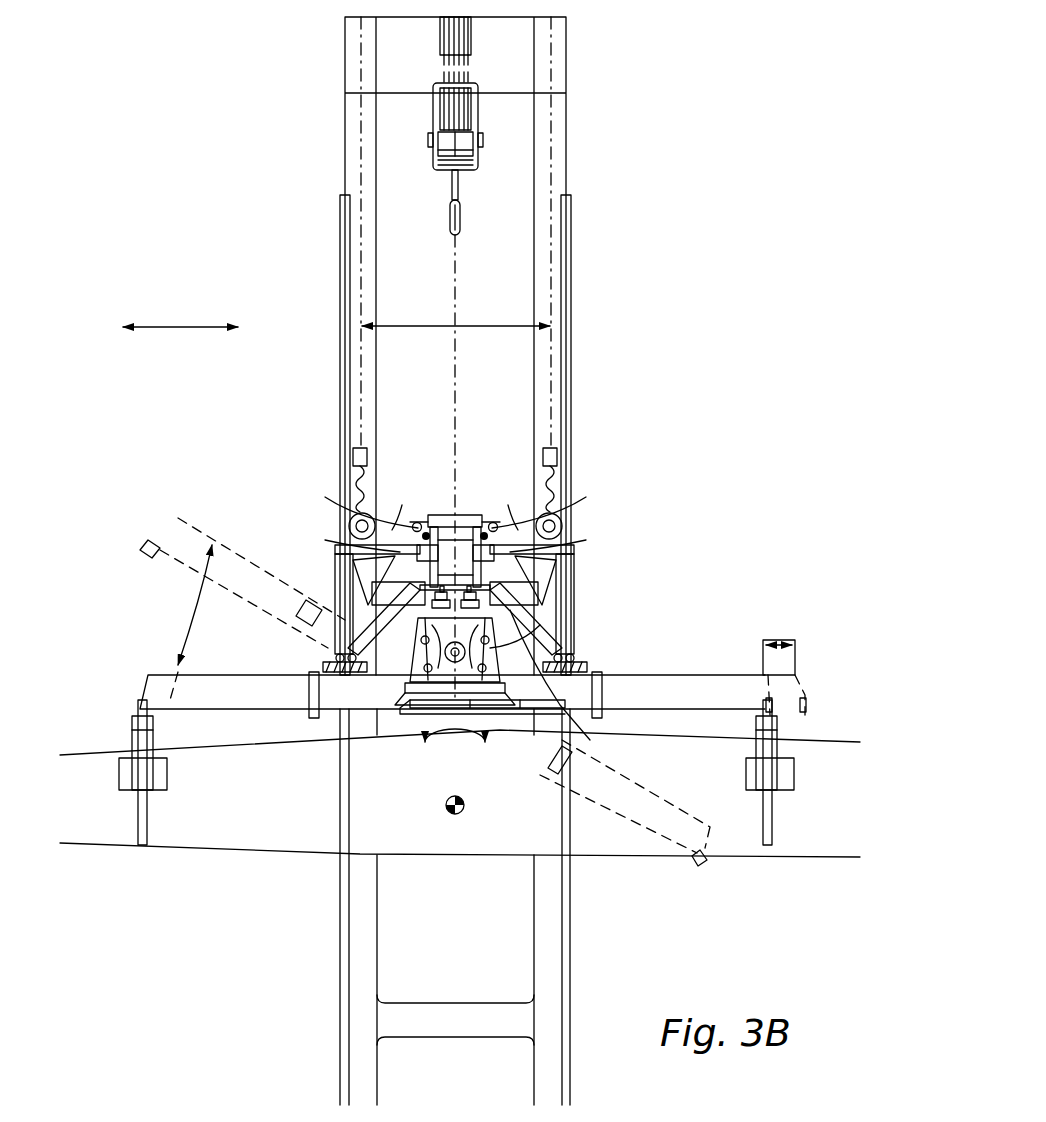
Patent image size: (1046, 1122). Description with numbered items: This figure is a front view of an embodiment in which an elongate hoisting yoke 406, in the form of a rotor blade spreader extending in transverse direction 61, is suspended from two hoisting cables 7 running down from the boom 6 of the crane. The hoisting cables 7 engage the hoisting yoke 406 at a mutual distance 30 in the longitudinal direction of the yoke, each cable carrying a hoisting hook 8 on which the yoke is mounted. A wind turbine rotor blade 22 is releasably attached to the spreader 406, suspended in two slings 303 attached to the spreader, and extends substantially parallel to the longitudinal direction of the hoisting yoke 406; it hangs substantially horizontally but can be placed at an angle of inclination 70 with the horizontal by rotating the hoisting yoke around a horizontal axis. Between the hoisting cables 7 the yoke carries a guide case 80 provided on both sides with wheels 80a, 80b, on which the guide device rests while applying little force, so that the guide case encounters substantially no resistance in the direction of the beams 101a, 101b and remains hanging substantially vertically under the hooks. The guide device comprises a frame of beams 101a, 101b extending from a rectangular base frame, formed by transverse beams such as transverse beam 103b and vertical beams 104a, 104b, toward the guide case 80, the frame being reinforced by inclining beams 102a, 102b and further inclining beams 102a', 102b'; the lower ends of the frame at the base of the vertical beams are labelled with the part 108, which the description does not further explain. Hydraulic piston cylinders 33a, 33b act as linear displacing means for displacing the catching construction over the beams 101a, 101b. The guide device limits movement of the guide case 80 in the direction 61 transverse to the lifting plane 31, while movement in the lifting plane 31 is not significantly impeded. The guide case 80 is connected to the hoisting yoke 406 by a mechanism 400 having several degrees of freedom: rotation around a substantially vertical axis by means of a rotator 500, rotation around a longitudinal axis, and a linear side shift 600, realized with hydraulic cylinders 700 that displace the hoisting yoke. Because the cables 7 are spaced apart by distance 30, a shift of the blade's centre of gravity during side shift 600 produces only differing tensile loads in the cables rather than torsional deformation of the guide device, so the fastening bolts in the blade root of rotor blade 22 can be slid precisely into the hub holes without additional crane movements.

The boom 6 is at (340, 75).
The hoisting cables 7 is at (355, 243).
The hoisting hook 8 is at (353, 456).
The rotor blade 22 is at (228, 830).
The distance between hoisting cables 30 is at (478, 326).
The lifting plane 31 is at (455, 266).
The hydraulic piston cylinder 33a is at (565, 512).
The hydraulic piston cylinder 33b is at (345, 512).
The transverse direction 61 is at (180, 327).
The angle of inclination 70 is at (200, 614).
The guide case 80 is at (455, 545).
The wheel 80a is at (416, 597).
The wheel 80b is at (495, 597).
The beam 101a is at (392, 548).
The beam 101b is at (518, 548).
The inclining beam 102a is at (280, 586).
The inclining beam 102b is at (600, 724).
The inclining beam 102a' is at (407, 507).
The inclining beam 102b' is at (507, 507).
The transverse beam 103b is at (560, 640).
The vertical beam 104a is at (350, 577).
The vertical beam 104b is at (562, 577).
The bracket 108 is at (338, 660).
The slings 303 is at (142, 822).
The mechanism 400 is at (408, 636).
The hoisting yoke 406 is at (705, 672).
The rotator 500 is at (478, 625).
The side shift 600 is at (780, 640).
The hydraulic cylinder 700 is at (500, 706).